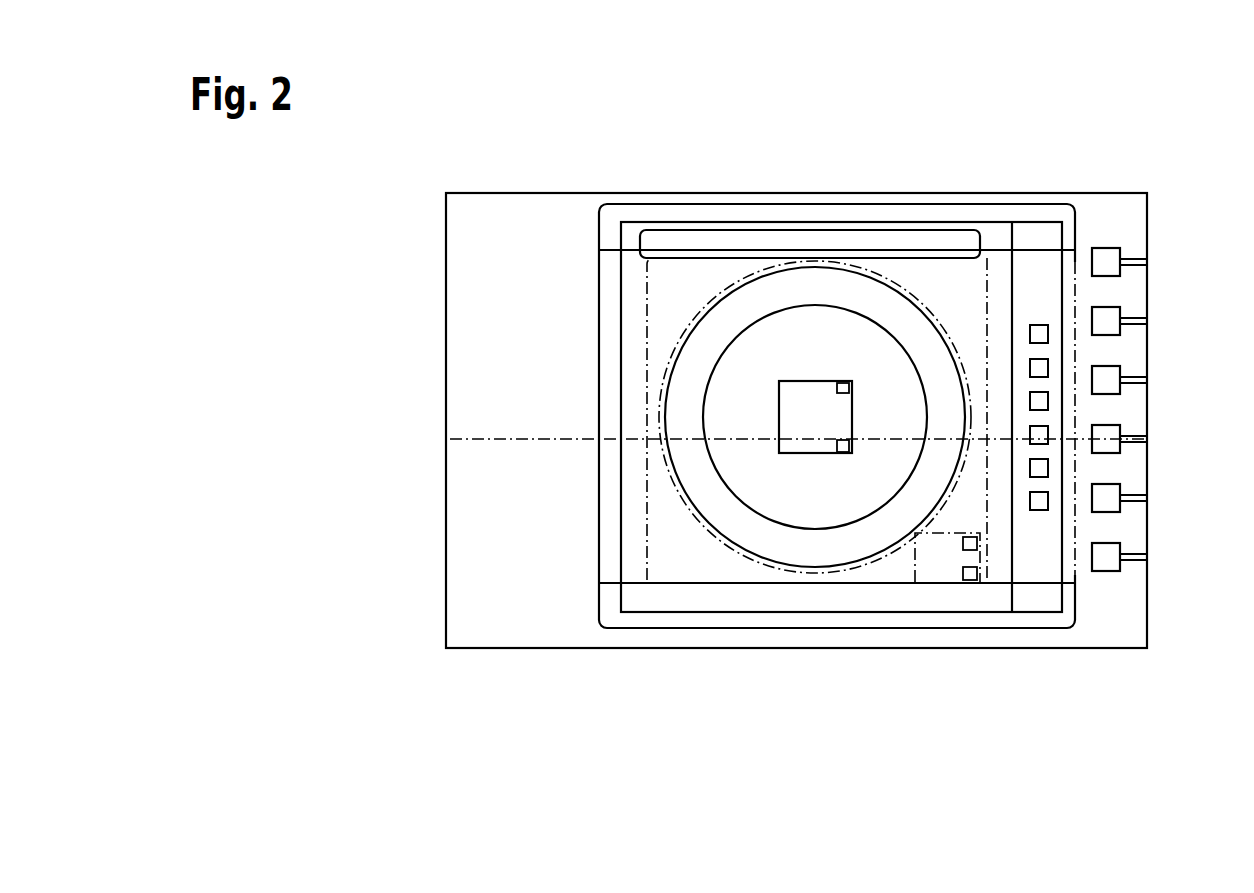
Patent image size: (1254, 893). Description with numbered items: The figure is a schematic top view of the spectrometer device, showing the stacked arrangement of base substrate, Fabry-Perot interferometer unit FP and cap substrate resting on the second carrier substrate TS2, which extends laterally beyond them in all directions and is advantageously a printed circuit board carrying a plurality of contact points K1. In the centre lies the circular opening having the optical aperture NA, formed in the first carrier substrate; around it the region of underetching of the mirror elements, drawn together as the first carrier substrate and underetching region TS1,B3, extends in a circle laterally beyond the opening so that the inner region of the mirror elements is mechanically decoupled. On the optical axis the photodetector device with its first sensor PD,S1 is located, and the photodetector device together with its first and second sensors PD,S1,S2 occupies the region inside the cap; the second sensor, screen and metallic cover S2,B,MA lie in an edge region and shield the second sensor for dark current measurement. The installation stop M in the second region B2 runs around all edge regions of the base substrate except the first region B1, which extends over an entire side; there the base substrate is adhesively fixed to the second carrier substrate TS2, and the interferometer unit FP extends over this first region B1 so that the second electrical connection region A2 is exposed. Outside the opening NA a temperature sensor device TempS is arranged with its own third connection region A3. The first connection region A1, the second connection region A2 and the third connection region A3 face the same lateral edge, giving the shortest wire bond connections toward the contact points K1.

The installation stop M is at (610, 228).
The second region B2 is at (670, 210).
The first region B1 is at (1063, 572).
The photodetector device, first sensor PD,S1 is at (812, 400).
The photodetector device, first sensor, second sensor PD,S1,S2 is at (915, 292).
The second sensor, screen, metallic cover S2,B,MA is at (967, 243).
The first electrical connection region A1 is at (840, 383).
The second electrical connection region A2 is at (1040, 332).
The third connection region A3 is at (978, 548).
The optical aperture NA is at (709, 412).
The first carrier substrate, underetching region TS1,B3 is at (837, 548).
The second carrier substrate TS2 is at (1102, 618).
The temperature sensor device TempS is at (943, 555).
The Fabry-Perot interferometer unit FP is at (1038, 543).
The contact points K1 is at (1103, 372).